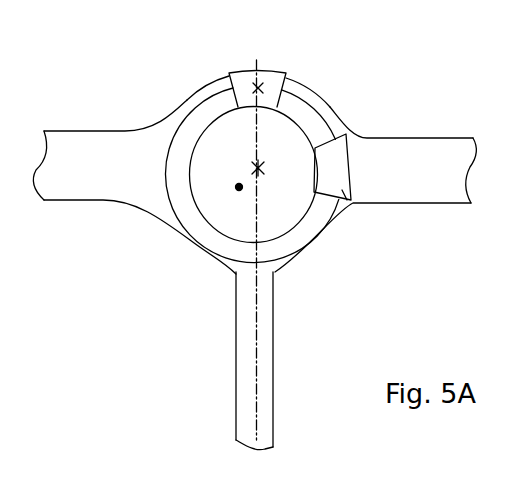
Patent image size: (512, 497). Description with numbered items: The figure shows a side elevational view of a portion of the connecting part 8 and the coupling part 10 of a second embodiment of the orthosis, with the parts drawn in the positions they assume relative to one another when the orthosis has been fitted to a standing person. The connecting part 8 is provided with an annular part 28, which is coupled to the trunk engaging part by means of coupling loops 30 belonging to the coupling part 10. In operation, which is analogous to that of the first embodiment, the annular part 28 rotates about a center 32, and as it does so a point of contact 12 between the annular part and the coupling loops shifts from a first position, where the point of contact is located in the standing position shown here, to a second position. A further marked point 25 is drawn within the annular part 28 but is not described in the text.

The connecting part 8 is at (236, 384).
The coupling part 10 is at (328, 104).
The point of contact 12 is at (237, 85).
The eccentric point 25 is at (234, 189).
The annular part 28 is at (200, 229).
The coupling loops 30 is at (280, 85).
The center 32 is at (262, 168).